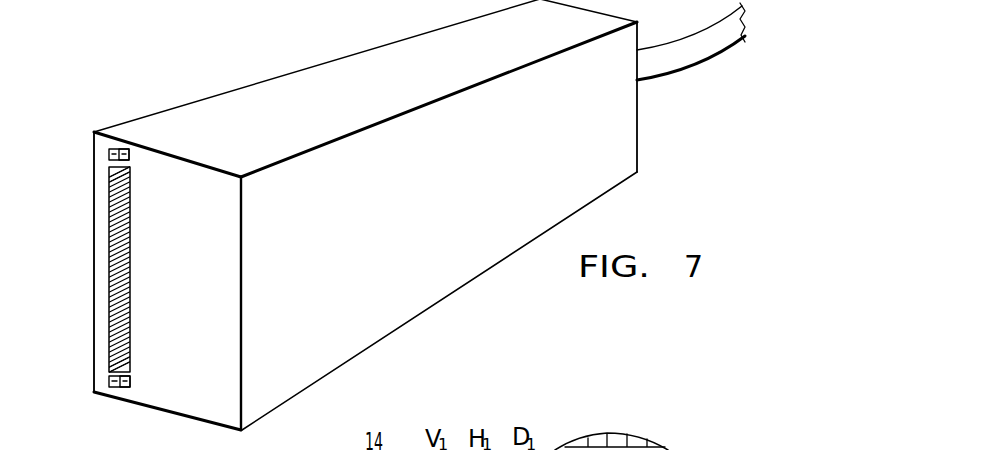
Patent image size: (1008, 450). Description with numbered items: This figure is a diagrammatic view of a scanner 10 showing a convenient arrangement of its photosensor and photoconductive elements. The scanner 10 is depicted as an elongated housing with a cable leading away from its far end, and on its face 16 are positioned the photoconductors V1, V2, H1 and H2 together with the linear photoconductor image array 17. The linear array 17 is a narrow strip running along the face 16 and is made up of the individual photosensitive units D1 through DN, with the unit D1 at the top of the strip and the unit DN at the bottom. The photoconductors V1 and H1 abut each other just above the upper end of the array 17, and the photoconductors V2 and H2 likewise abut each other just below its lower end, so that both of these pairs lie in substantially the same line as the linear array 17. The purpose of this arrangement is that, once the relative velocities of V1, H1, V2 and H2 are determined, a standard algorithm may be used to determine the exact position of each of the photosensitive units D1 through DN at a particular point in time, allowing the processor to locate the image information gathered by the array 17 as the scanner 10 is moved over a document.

The scanner 10 is at (459, 270).
The face of scanner 16 is at (94, 247).
The linear photoconductor image array 17 is at (130, 272).
The photoconductor V1 is at (98, 134).
The photoconductor H1 is at (132, 151).
The photosensitive unit D1 is at (109, 167).
The photosensitive unit DN is at (109, 366).
The photoconductor V2 is at (110, 380).
The photoconductor H2 is at (123, 388).